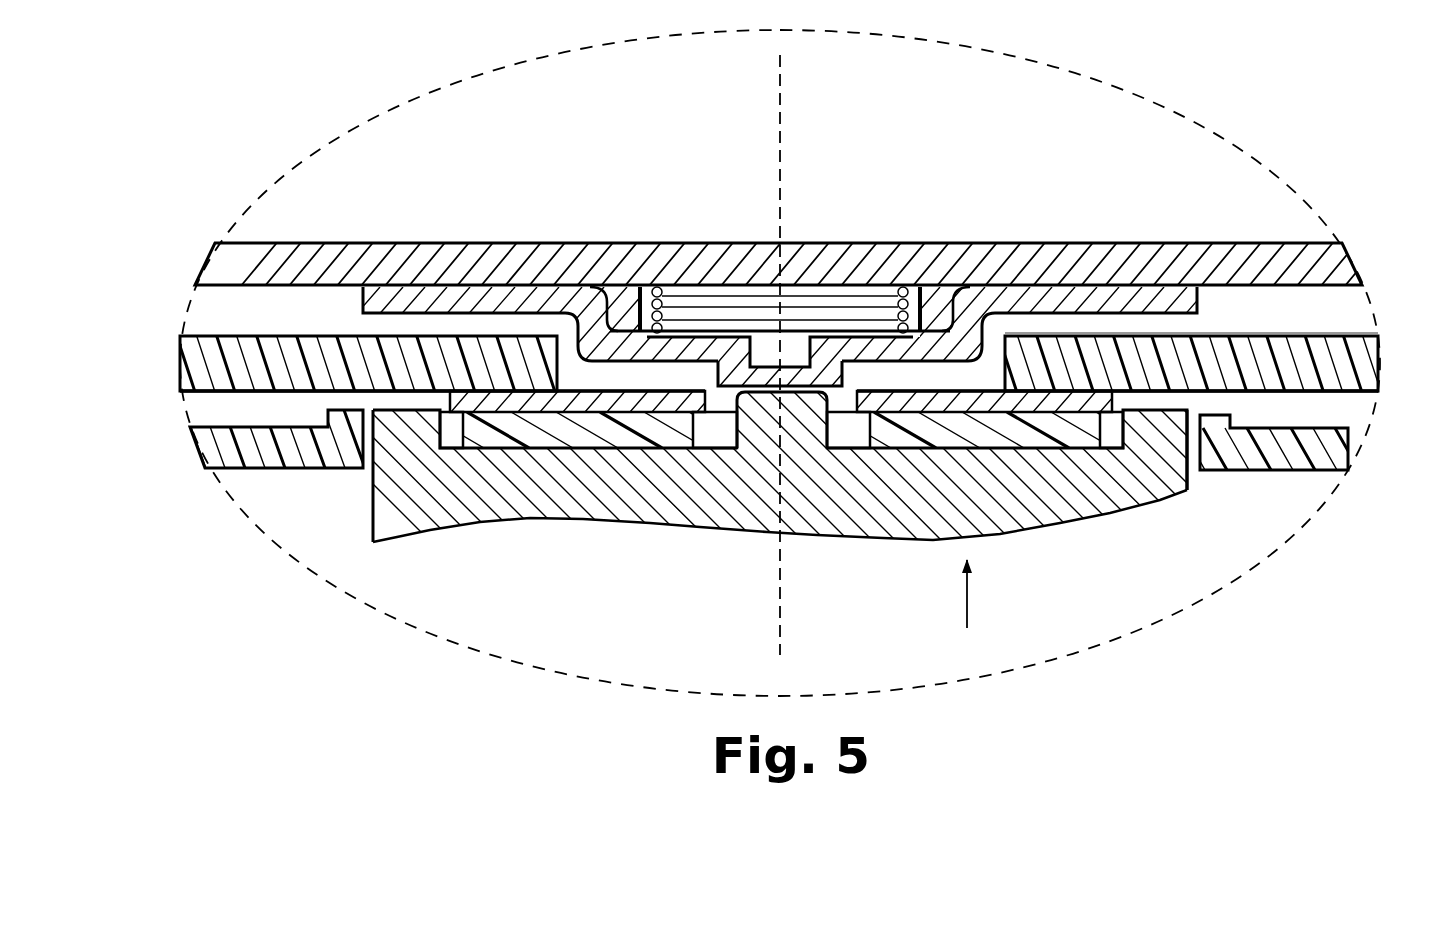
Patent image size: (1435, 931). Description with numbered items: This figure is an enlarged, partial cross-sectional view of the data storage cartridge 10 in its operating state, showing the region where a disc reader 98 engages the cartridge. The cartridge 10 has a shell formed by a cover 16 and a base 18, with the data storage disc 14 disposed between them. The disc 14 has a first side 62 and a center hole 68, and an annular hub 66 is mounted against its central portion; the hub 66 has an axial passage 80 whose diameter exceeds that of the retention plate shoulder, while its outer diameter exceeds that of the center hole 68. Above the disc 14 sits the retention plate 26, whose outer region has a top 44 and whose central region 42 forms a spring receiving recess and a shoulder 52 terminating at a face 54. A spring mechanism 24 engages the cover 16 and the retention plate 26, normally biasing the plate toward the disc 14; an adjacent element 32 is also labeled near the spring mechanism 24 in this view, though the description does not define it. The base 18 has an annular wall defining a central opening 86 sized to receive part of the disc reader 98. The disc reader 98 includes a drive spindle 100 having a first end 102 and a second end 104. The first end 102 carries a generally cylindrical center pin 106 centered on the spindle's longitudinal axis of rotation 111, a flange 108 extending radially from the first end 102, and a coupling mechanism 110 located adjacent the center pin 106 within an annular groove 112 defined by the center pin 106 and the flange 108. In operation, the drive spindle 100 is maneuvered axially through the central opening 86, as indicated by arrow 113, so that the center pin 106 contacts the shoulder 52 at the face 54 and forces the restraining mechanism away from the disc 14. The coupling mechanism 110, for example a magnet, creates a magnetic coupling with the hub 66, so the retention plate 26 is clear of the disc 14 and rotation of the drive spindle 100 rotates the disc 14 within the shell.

The data storage cartridge 10 is at (298, 204).
The data storage disc 14 is at (1360, 355).
The cover 16 is at (403, 242).
The base 18 is at (222, 478).
The spring mechanism 24 is at (774, 311).
The retention plate 26 is at (1095, 287).
The right retaining wall 32 is at (932, 297).
The central region 42 is at (618, 396).
The top 44 is at (363, 290).
The shoulder 52 is at (828, 372).
The face 54 is at (745, 392).
The first side 62 is at (1292, 334).
The hub 66 is at (636, 286).
The center hole 68 is at (578, 312).
The axial passage 80 is at (851, 390).
The central opening 86 is at (1230, 420).
The disc reader 98 is at (675, 525).
The drive spindle 100 is at (373, 519).
The first end 102 is at (360, 396).
The second end 104 is at (401, 547).
The center pin 106 is at (831, 432).
The flange 108 is at (1123, 432).
The coupling mechanism 110 is at (520, 433).
The longitudinal axis of rotation 111 is at (781, 607).
The annular groove 112 is at (453, 440).
The arrow 113 is at (968, 602).